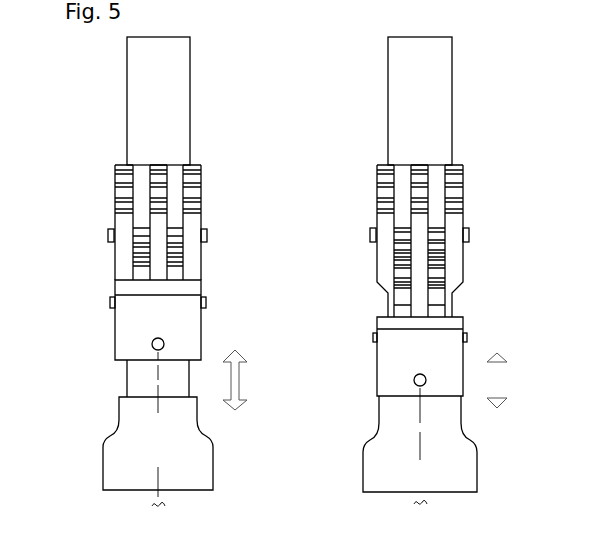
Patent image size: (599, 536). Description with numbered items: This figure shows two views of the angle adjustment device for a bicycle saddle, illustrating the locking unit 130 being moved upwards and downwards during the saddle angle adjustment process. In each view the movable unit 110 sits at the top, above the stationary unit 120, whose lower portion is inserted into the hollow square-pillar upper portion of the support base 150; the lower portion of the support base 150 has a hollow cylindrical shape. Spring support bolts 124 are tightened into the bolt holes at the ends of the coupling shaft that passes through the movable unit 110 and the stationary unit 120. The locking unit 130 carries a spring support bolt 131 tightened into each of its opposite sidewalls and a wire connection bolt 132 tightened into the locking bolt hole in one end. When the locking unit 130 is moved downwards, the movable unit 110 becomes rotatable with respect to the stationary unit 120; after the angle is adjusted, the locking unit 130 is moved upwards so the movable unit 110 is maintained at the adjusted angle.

The movable unit 110 is at (127, 78).
The stationary unit 120 is at (131, 386).
The spring support bolt 124 is at (108, 234).
The locking unit 130 is at (122, 325).
The spring support bolt 131 is at (110, 302).
The wire connection bolt 132 is at (151, 344).
The support base 150 is at (205, 468).